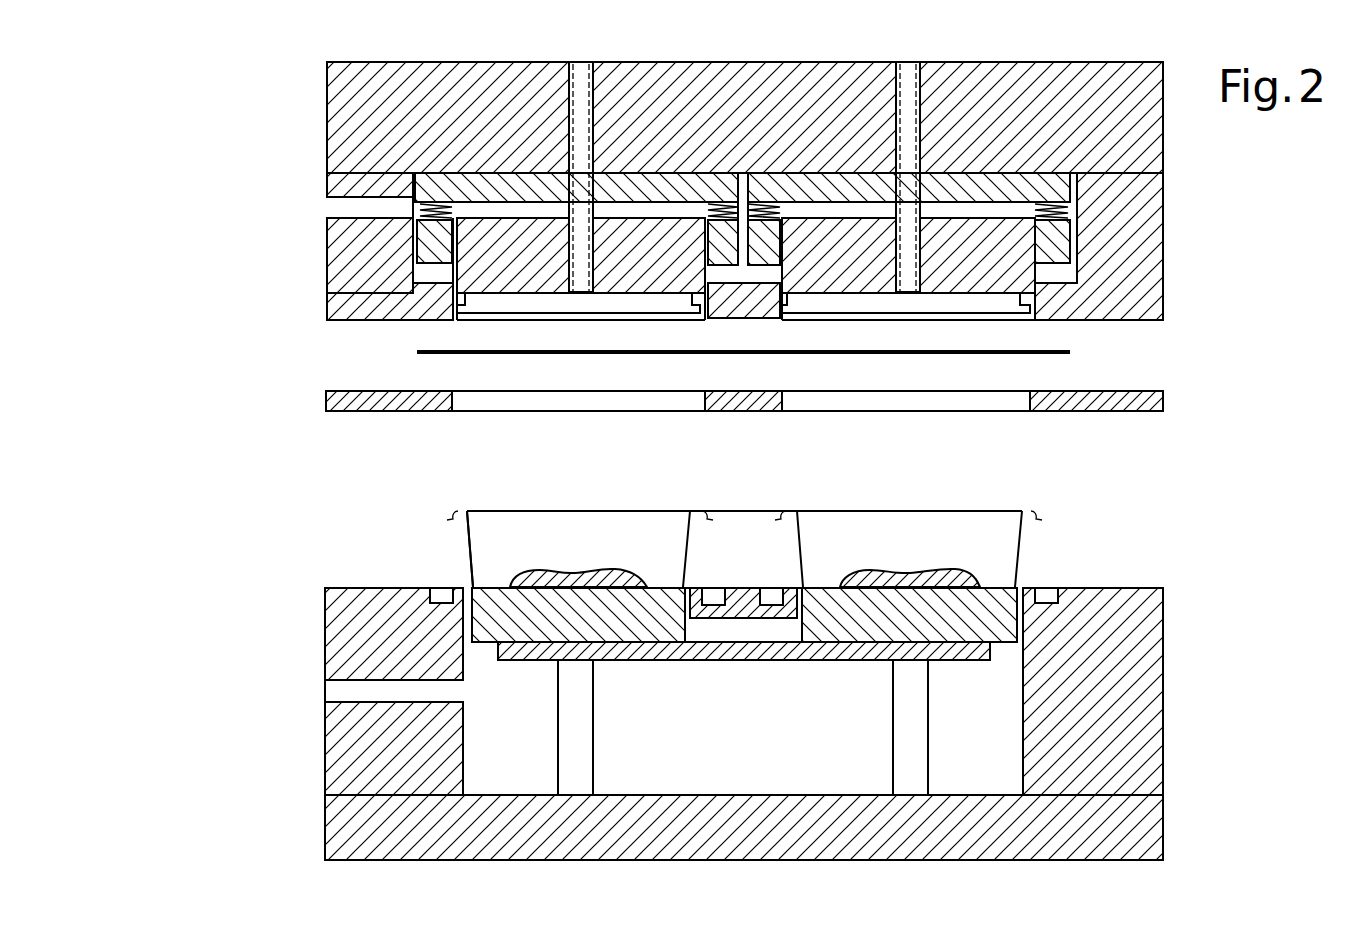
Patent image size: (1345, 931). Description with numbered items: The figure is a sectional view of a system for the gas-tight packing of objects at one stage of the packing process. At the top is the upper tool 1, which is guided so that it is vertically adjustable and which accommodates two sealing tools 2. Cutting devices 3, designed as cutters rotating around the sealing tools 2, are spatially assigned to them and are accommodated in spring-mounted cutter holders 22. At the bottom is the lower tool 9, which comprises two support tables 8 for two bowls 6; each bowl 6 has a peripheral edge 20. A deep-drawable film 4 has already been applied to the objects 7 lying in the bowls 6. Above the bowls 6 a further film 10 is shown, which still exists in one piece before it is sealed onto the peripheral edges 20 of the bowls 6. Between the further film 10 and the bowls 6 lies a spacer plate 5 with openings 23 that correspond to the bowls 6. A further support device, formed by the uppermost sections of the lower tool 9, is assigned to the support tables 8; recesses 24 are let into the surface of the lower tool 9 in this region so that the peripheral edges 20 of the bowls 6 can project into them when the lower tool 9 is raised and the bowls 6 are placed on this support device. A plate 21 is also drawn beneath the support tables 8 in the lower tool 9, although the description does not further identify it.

The upper tool 1 is at (358, 103).
The sealing tool 2 is at (480, 225).
The cutting device 3 is at (447, 272).
The deep-drawable film 4 is at (455, 512).
The spacer plate 5 is at (326, 401).
The bowl 6 is at (467, 545).
The object 7 is at (508, 578).
The support table 8 is at (480, 628).
The lower tool 9 is at (342, 750).
The further film 10 is at (417, 352).
The peripheral edge 20 is at (779, 519).
The heating plate 21 is at (763, 660).
The cutter holder 22 is at (415, 212).
The opening 23 is at (502, 417).
The recess 24 is at (428, 602).